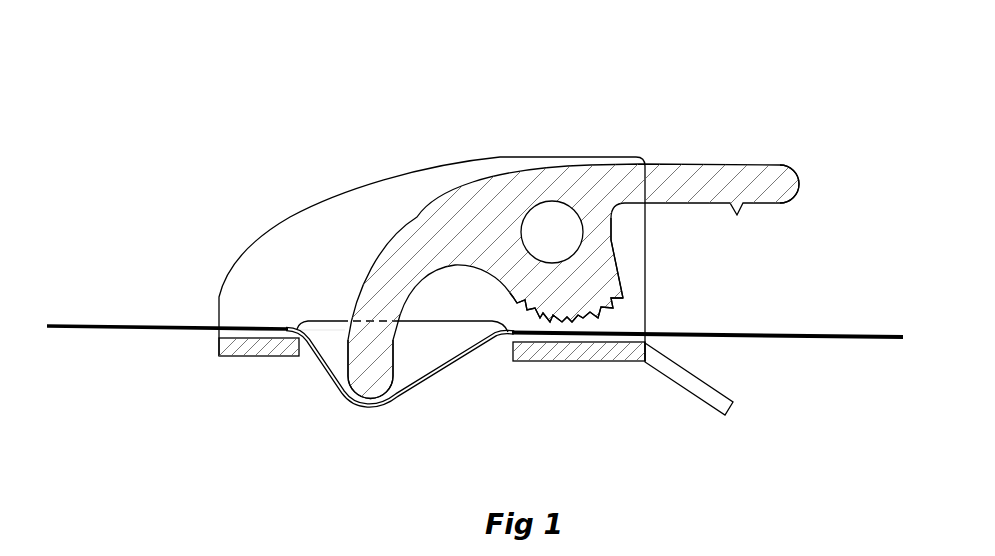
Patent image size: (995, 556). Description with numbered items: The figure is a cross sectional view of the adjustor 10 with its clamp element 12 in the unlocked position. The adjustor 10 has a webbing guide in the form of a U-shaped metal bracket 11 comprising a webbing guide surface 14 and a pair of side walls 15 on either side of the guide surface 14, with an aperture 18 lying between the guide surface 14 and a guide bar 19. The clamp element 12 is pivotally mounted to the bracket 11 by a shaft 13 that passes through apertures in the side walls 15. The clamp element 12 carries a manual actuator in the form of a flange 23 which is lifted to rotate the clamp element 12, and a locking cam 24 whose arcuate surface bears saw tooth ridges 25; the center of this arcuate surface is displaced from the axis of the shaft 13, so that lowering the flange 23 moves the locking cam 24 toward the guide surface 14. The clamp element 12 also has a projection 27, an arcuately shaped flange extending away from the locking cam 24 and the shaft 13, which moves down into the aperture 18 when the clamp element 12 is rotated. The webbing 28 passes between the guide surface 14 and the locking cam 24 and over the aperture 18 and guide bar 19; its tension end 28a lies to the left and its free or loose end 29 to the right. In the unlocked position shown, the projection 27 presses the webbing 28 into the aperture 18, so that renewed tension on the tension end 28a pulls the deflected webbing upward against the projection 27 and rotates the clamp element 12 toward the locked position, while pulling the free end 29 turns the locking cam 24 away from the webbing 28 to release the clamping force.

The adjustor 10 is at (446, 93).
The bracket 11 is at (338, 170).
The clamp element 12 is at (634, 235).
The shaft 13 is at (550, 228).
The webbing guide surface 14 is at (702, 398).
The side walls 15 is at (348, 240).
The aperture 18 is at (326, 330).
The guide bar 19 is at (257, 348).
The flange 23 is at (803, 188).
The locking cam 24 is at (625, 276).
The saw tooth ridges 25 is at (540, 324).
The projection 27 is at (358, 365).
The webbing 28 is at (431, 378).
The tension end 28a is at (128, 325).
The free end 29 is at (833, 338).